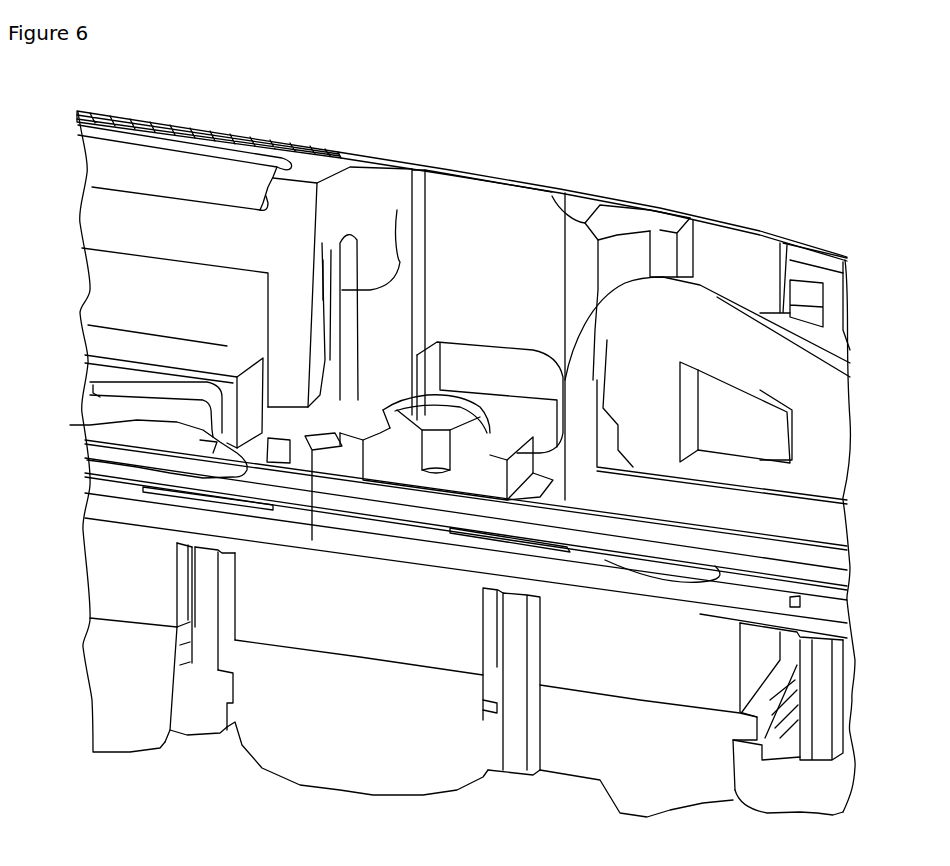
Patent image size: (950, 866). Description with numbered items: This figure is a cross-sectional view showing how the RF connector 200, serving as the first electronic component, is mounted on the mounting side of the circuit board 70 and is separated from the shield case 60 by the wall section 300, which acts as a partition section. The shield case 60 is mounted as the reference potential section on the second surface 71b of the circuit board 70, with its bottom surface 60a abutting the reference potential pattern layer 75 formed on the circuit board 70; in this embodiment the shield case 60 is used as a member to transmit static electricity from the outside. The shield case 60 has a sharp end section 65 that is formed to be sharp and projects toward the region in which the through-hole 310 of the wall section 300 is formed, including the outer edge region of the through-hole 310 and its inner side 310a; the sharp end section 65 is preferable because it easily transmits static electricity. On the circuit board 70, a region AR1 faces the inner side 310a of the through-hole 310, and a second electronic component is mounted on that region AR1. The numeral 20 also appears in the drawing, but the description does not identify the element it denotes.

The shield case 60 is at (184, 355).
The sharp end section 65 is at (243, 355).
The wall section 300 is at (349, 232).
The inner side 310a is at (323, 300).
The through-hole 310 is at (397, 210).
The RF connector 200 is at (539, 345).
The second surface 71b is at (603, 380).
The reference potential pattern layer 75 is at (90, 426).
The bottom surface 60a is at (245, 465).
The circuit board 70 is at (817, 558).
The base 20 is at (316, 470).
The region AR1 is at (340, 450).